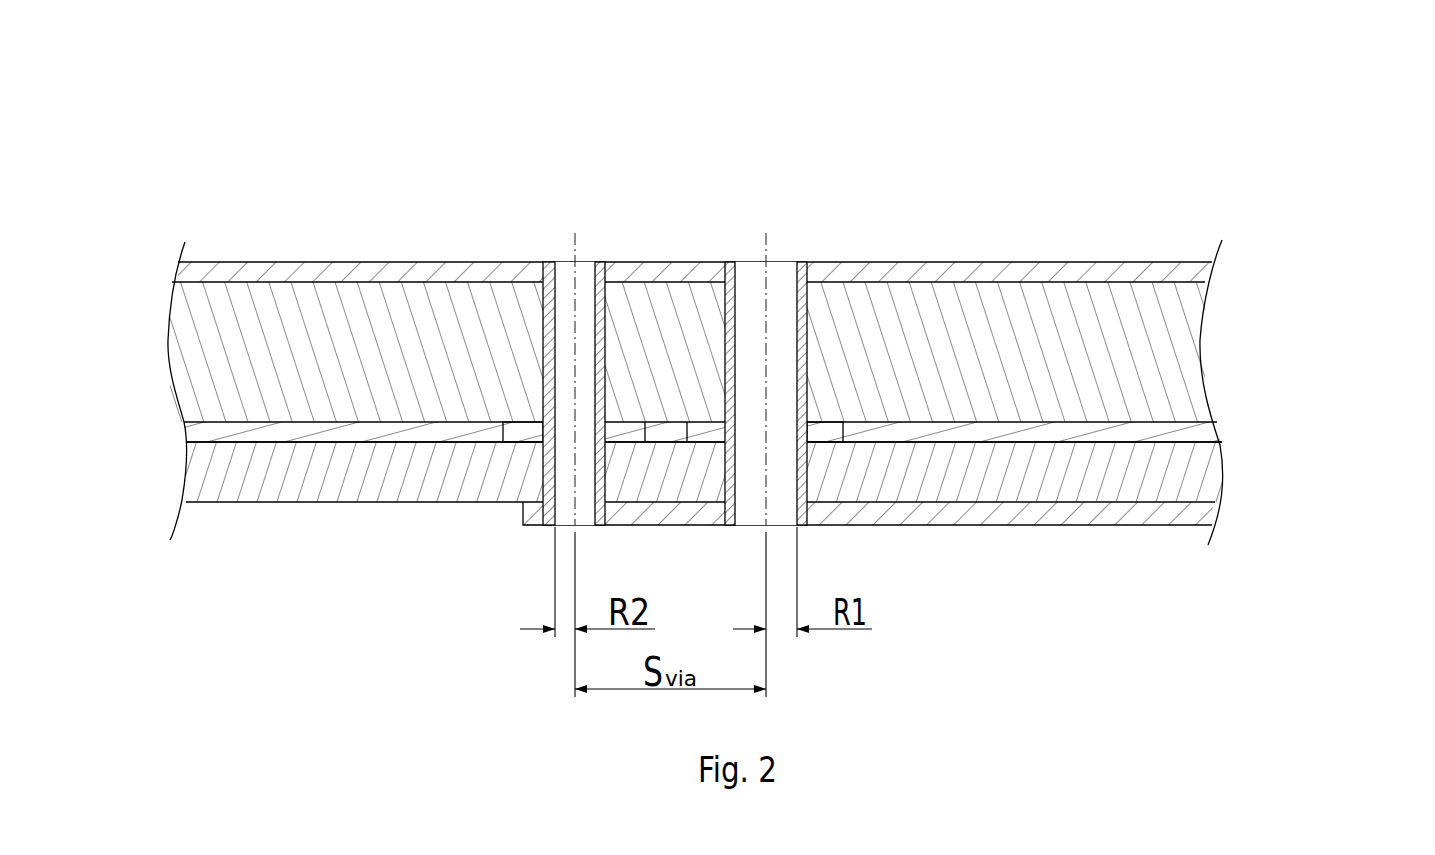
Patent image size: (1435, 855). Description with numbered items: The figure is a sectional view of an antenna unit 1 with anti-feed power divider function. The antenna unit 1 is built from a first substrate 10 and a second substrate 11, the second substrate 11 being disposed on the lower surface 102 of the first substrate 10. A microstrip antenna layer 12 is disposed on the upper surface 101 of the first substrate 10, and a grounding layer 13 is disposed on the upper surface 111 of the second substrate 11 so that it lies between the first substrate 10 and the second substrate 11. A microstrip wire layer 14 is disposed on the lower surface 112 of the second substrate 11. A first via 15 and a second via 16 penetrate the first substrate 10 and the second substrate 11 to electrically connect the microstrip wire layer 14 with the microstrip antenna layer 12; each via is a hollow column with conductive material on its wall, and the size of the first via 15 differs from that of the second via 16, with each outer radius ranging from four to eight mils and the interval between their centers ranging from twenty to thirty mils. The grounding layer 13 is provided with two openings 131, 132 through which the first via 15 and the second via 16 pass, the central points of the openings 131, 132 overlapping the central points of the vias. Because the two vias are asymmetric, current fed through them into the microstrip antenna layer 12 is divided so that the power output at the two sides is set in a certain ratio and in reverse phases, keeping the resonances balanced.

The antenna unit 1 is at (1130, 133).
The first substrate 10 is at (1167, 342).
The upper surface of the first substrate 101 is at (1183, 282).
The lower surface of the first substrate 102 is at (1198, 420).
The second substrate 11 is at (1177, 480).
The upper surface of the second substrate 111 is at (218, 443).
The lower surface of the second substrate 112 is at (352, 503).
The microstrip antenna layer 12 is at (210, 273).
The grounding layer 13 is at (262, 433).
The opening 131 is at (843, 422).
The opening 132 is at (503, 422).
The microstrip wire layer 14 is at (1120, 515).
The first via 15 is at (807, 310).
The second via 16 is at (607, 310).